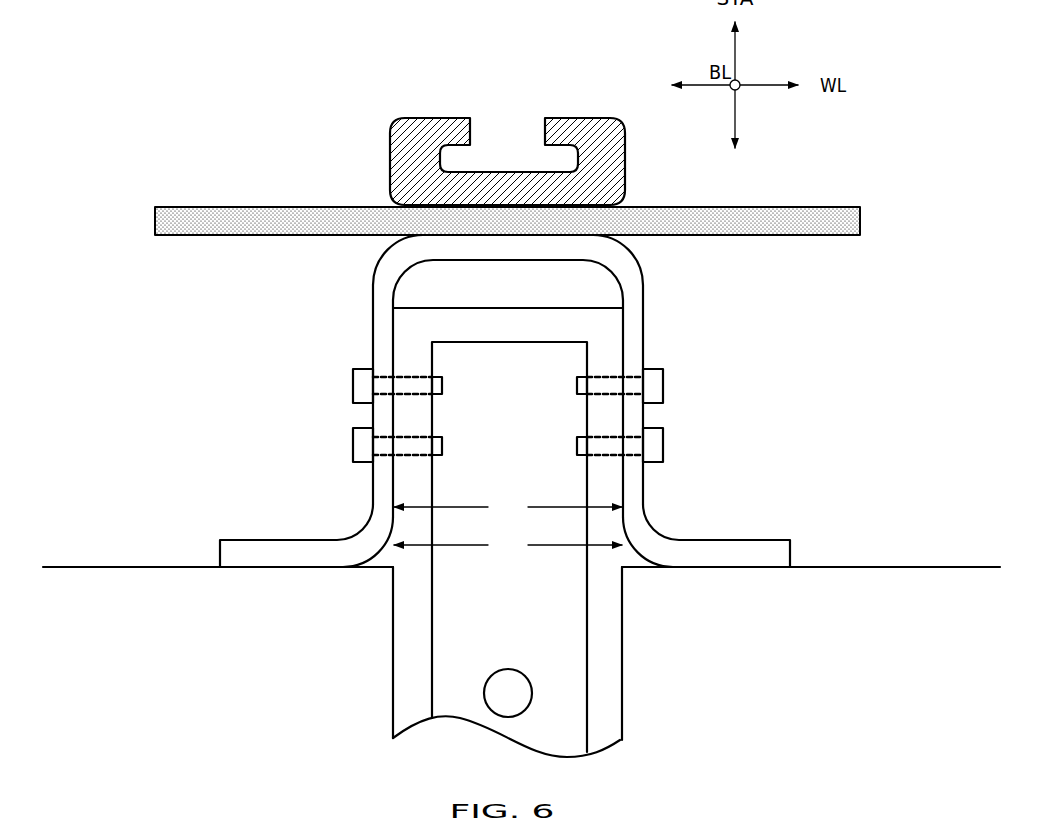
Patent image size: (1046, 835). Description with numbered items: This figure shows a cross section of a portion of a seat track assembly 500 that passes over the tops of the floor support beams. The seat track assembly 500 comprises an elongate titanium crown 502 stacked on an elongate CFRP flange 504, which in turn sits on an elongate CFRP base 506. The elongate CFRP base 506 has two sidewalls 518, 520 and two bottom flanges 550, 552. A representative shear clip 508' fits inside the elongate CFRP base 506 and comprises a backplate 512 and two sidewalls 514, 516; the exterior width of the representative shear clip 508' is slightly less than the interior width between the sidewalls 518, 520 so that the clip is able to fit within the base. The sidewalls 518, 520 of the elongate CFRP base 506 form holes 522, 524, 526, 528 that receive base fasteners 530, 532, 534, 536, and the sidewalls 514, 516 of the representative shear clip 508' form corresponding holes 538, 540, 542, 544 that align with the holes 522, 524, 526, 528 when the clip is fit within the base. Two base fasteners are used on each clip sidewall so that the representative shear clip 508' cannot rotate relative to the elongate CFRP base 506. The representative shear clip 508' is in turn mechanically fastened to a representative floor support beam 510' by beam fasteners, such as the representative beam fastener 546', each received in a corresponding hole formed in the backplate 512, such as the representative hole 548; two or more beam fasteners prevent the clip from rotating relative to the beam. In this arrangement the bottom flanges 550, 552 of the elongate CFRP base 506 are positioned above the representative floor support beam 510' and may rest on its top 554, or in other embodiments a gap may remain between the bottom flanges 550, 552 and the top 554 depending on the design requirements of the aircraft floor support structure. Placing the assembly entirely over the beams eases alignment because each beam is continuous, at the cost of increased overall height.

The seat track assembly 500 is at (259, 96).
The elongate titanium crown 502 is at (390, 163).
The elongate CFRP flange 504 is at (155, 210).
The elongate CFRP base 506 is at (220, 542).
The representative shear clip 508' is at (508, 653).
The representative floor support beam 510' is at (521, 630).
The backplate 512 is at (494, 603).
The sidewall 514 is at (391, 698).
The sidewall 516 is at (624, 707).
The sidewall 518 is at (371, 290).
The sidewall 520 is at (646, 298).
The hole 522 is at (387, 374).
The hole 524 is at (387, 463).
The hole 526 is at (631, 374).
The hole 528 is at (631, 463).
The base fastener 530 is at (353, 385).
The base fastener 532 is at (353, 445).
The base fastener 534 is at (663, 377).
The base fastener 536 is at (663, 435).
The hole 538 is at (413, 373).
The hole 540 is at (413, 456).
The hole 542 is at (601, 373).
The hole 544 is at (601, 456).
The representative beam fastener 546' is at (483, 704).
The representative hole 548 is at (507, 667).
The bottom flange 550 is at (307, 568).
The bottom flange 552 is at (718, 568).
The top 554 is at (856, 565).